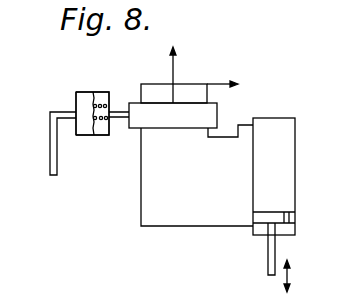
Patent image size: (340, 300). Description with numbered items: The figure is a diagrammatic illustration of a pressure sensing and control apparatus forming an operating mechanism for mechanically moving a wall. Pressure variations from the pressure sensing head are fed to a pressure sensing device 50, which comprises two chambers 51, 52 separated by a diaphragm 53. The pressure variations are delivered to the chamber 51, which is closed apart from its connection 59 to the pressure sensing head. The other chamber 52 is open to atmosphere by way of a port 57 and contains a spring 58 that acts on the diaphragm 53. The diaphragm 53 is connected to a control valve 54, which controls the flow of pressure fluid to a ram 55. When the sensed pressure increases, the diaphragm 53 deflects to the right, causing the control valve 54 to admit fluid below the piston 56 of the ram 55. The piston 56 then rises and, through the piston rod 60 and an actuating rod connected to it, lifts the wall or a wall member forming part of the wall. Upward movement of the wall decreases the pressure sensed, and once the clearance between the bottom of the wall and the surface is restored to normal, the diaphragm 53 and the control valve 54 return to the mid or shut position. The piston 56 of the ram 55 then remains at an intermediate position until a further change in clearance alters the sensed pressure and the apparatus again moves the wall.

The pressure sensing device 50 is at (86, 92).
The chamber 51 is at (77, 98).
The chamber 52 is at (102, 123).
The diaphragm 53 is at (95, 122).
The control valve 54 is at (198, 120).
The ram 55 is at (253, 185).
The piston 56 is at (255, 221).
The port 57 is at (107, 92).
The spring 58 is at (112, 125).
The connection 59 is at (50, 152).
The piston rod 60 is at (277, 245).